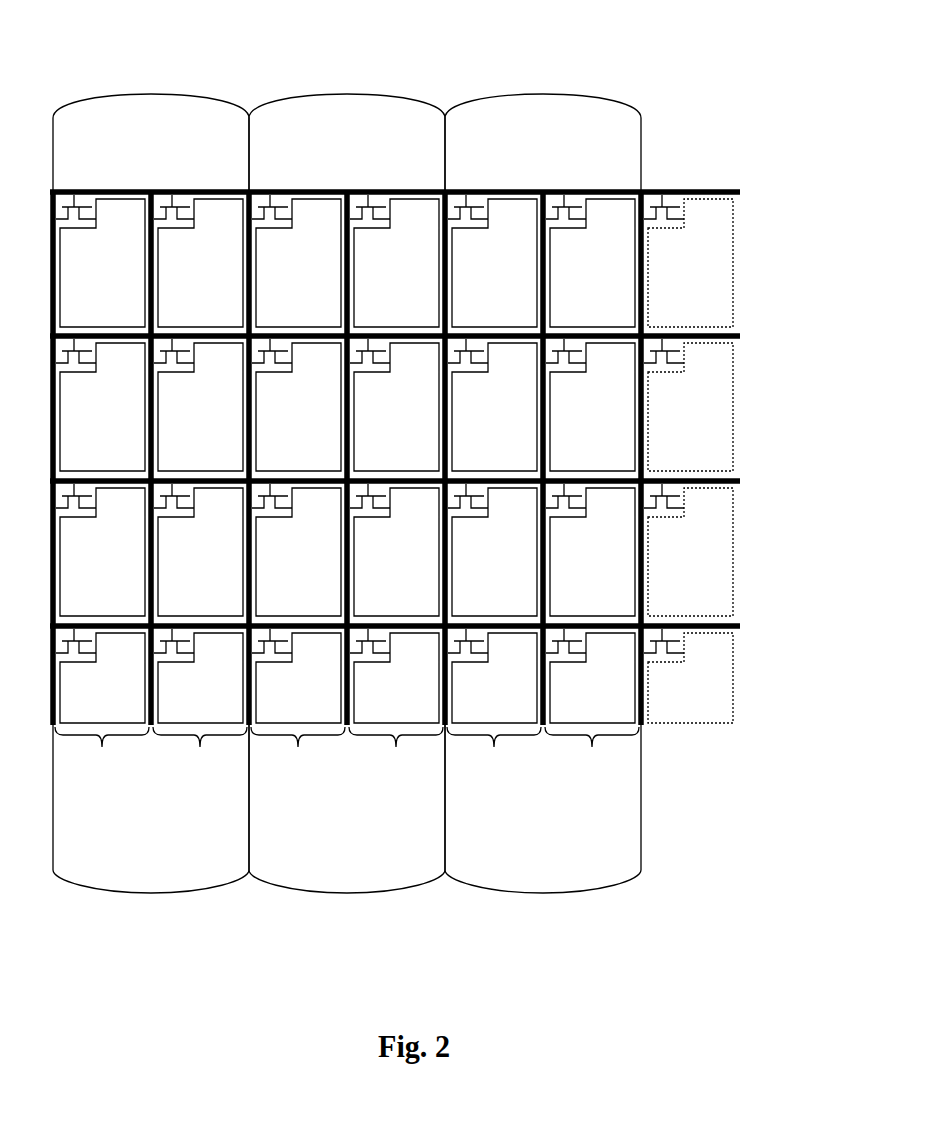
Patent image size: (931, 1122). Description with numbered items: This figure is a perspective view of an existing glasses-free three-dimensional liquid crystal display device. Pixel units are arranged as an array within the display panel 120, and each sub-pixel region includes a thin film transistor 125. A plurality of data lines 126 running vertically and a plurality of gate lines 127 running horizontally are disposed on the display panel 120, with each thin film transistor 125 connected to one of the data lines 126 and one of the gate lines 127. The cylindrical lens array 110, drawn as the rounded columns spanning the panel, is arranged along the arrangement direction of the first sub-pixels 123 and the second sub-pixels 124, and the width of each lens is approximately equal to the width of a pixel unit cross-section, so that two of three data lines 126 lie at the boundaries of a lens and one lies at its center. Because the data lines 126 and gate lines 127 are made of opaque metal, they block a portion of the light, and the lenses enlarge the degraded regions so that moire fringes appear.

The cylindrical lens array 110 is at (607, 89).
The display panel 120 is at (747, 406).
The first sub-pixels 123 is at (298, 754).
The second sub-pixels 124 is at (396, 755).
The thin film transistor 125 is at (676, 210).
The data lines 126 is at (644, 281).
The gate lines 127 is at (743, 194).